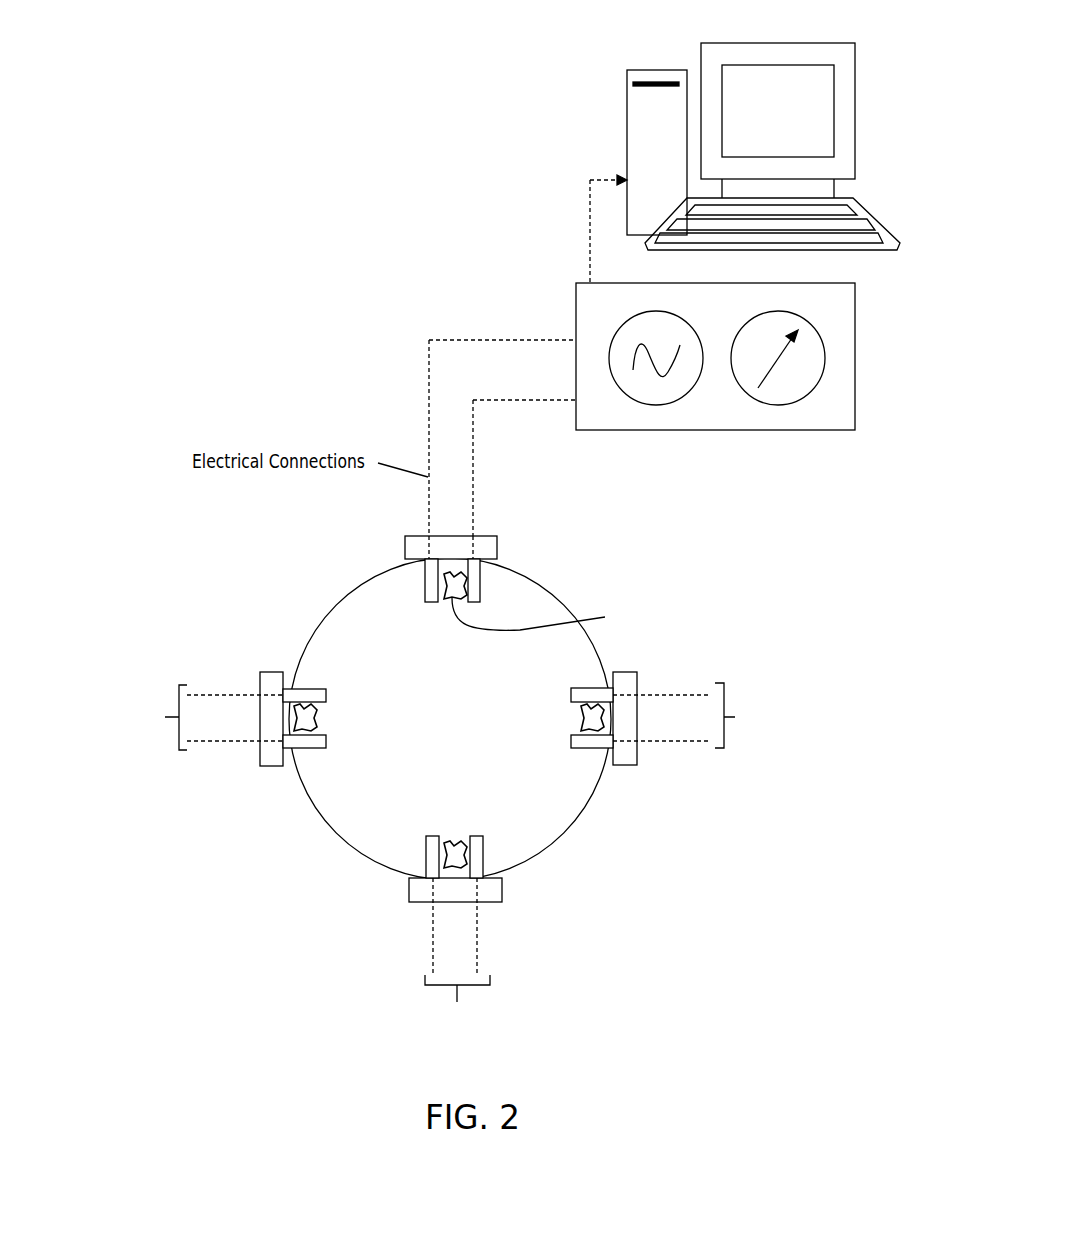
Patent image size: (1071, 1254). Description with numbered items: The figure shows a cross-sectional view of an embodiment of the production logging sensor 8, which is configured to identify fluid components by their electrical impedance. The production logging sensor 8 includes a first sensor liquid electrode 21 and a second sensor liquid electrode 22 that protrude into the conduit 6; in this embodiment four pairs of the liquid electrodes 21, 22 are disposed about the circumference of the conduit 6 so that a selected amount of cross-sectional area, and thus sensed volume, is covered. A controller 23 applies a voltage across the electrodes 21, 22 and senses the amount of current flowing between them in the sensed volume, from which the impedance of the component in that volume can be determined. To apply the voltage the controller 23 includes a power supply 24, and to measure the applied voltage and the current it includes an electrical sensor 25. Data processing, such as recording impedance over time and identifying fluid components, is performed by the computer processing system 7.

The conduit 6 is at (293, 650).
The computer processing system 7 is at (625, 97).
The production logging sensor 8 is at (488, 578).
The first sensor liquid electrode 21 is at (425, 583).
The second sensor liquid electrode 22 is at (477, 582).
The controller 23 is at (671, 378).
The power supply 24 is at (648, 407).
The electrical sensor 25 is at (798, 405).